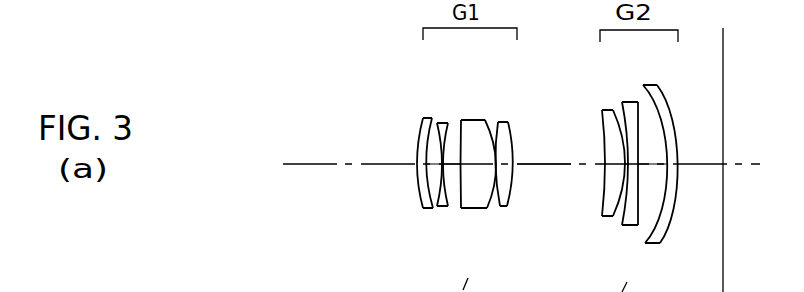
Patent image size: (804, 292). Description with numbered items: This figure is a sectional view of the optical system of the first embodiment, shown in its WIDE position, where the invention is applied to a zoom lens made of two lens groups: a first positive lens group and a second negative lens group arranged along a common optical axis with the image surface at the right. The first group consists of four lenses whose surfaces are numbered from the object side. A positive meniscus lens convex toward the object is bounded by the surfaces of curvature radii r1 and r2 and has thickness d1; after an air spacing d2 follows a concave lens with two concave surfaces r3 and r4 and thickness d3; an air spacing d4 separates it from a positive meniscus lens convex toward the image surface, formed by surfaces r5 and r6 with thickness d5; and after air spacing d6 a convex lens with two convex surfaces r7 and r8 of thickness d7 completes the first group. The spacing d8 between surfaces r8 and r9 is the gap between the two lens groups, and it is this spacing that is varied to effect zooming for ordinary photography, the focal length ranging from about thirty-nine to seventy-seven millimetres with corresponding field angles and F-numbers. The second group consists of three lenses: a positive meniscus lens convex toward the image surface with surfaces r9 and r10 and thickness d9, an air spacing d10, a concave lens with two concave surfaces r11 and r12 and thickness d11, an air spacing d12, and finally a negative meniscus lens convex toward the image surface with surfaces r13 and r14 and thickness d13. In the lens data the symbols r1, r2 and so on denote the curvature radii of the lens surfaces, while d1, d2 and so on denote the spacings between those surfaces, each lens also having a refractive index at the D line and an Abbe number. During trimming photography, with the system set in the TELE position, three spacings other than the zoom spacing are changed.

The curvature radius of first lens surface r1 is at (420, 134).
The curvature radius of second lens surface r2 is at (424, 118).
The curvature radius of third lens surface r3 is at (438, 124).
The curvature radius of fourth lens surface r4 is at (445, 124).
The curvature radius of fifth lens surface r5 is at (462, 120).
The curvature radius of sixth lens surface r6 is at (485, 120).
The curvature radius of seventh lens surface r7 is at (499, 124).
The curvature radius of eighth lens surface r8 is at (511, 128).
The curvature radius of ninth lens surface r9 is at (602, 115).
The curvature radius of tenth lens surface r10 is at (607, 111).
The curvature radius of eleventh lens surface r11 is at (622, 103).
The curvature radius of twelfth lens surface r12 is at (634, 102).
The curvature radius of thirteenth lens surface r13 is at (648, 85).
The curvature radius of fourteenth lens surface r14 is at (670, 108).
The spacing between first and second lens surfaces d1 is at (417, 175).
The spacing between second and third lens surfaces d2 is at (426, 177).
The spacing between third and fourth lens surfaces d3 is at (442, 205).
The spacing between fourth and fifth lens surfaces d4 is at (452, 175).
The spacing between fifth and sixth lens surfaces d5 is at (474, 164).
The spacing between sixth and seventh lens surfaces d6 is at (495, 195).
The spacing between seventh and eighth lens surfaces d7 is at (510, 202).
The spacing between eighth and ninth lens surfaces d8 is at (544, 179).
The spacing between ninth and tenth lens surfaces d9 is at (605, 183).
The spacing between tenth and eleventh lens surfaces d10 is at (618, 213).
The spacing between eleventh and twelfth lens surfaces d11 is at (632, 207).
The spacing between twelfth and thirteenth lens surfaces d12 is at (652, 180).
The spacing between thirteenth and fourteenth lens surfaces d13 is at (678, 197).